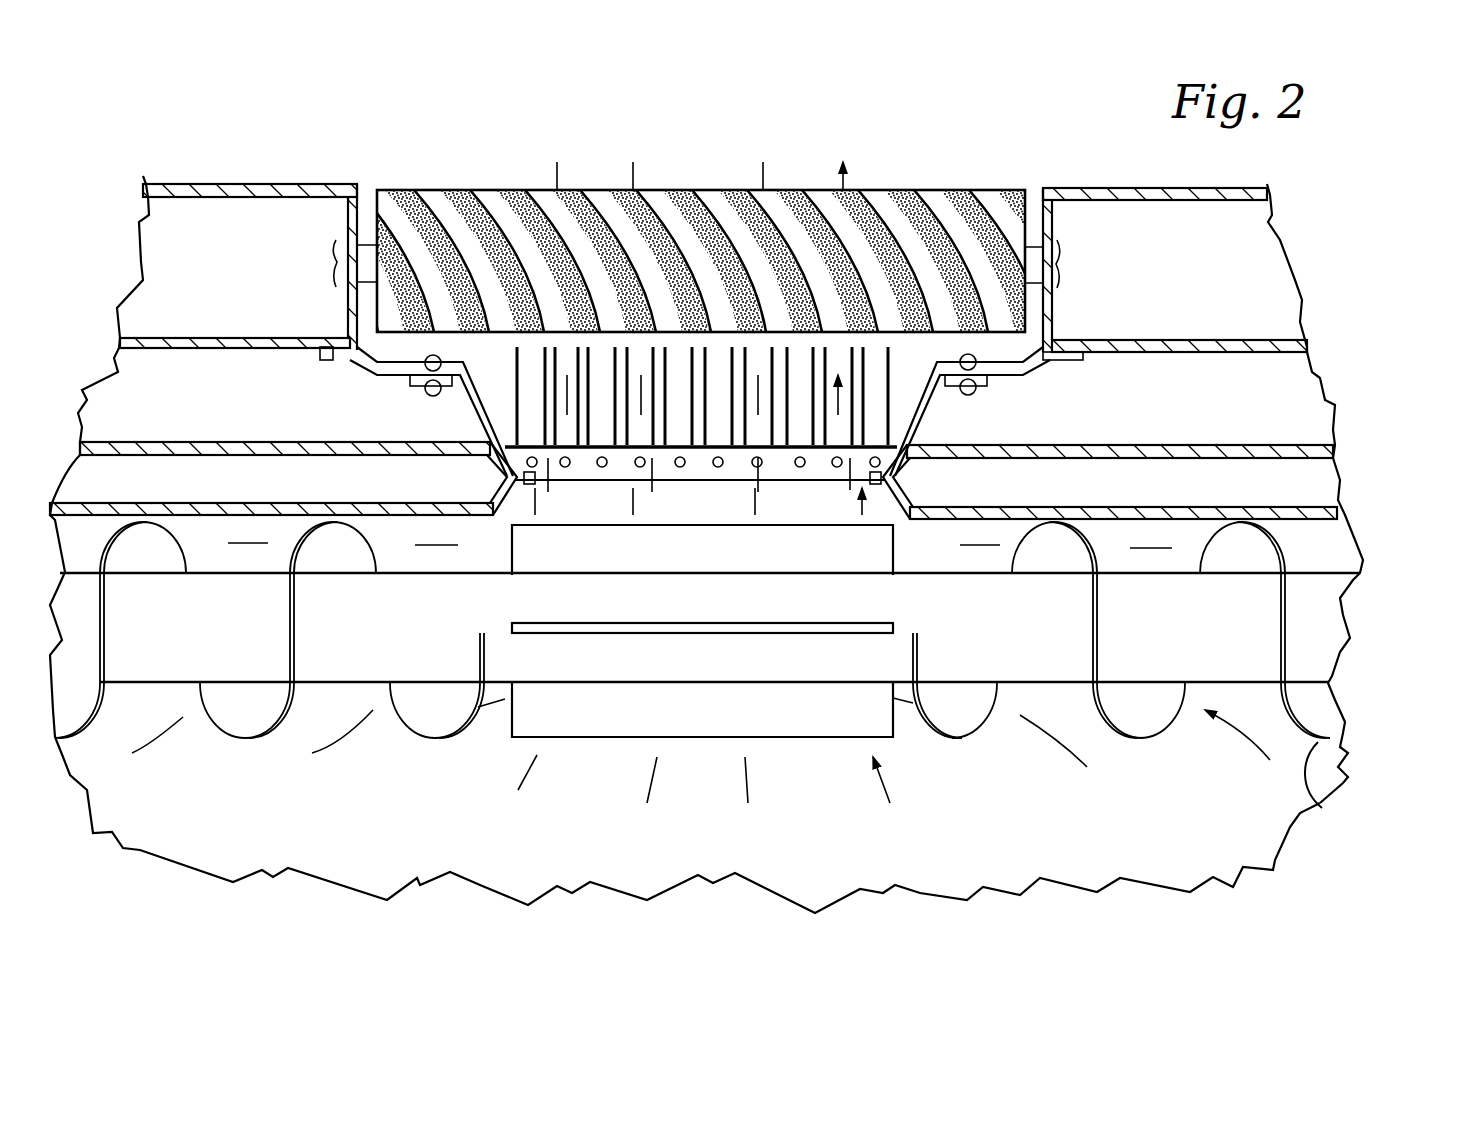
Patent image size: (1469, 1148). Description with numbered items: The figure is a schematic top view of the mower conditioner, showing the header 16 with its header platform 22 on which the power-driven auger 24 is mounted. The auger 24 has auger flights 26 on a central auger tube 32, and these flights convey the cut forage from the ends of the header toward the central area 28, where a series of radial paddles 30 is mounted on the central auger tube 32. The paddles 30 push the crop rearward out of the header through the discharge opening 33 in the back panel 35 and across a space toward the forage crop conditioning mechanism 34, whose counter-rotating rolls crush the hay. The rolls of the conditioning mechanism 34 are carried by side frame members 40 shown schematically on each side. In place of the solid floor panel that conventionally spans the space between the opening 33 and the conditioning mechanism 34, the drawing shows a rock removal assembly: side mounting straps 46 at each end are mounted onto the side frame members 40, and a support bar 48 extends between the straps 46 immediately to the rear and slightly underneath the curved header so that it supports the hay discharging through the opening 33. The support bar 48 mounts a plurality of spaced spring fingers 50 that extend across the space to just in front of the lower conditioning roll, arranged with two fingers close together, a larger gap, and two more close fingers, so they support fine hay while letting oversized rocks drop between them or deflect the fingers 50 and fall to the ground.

The header 16 is at (1370, 723).
The header platform 22 is at (1082, 855).
The auger 24 is at (252, 740).
The auger flights 26 is at (1329, 796).
The central area 28 is at (578, 742).
The radial paddles 30 is at (893, 722).
The central auger tube 32 is at (1315, 604).
The discharge opening 33 is at (806, 493).
The forage crop conditioning mechanism 34 is at (700, 203).
The back panel 35 is at (1247, 455).
The side frame members 40 is at (326, 360).
The side mounting straps 46 is at (482, 412).
The support bar 48 is at (690, 479).
The spring fingers 50 is at (540, 368).